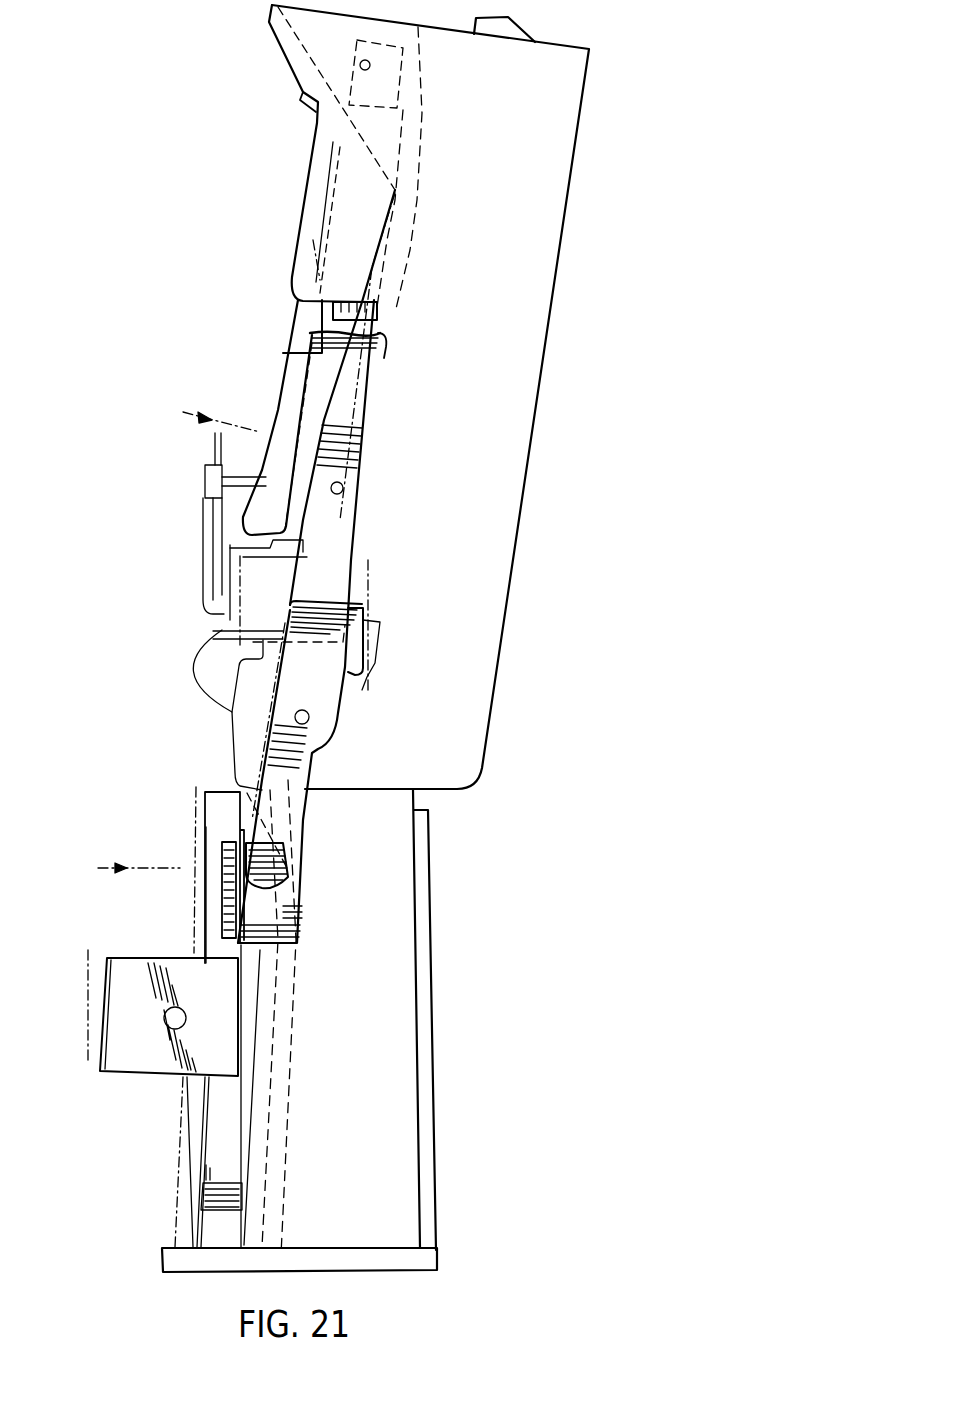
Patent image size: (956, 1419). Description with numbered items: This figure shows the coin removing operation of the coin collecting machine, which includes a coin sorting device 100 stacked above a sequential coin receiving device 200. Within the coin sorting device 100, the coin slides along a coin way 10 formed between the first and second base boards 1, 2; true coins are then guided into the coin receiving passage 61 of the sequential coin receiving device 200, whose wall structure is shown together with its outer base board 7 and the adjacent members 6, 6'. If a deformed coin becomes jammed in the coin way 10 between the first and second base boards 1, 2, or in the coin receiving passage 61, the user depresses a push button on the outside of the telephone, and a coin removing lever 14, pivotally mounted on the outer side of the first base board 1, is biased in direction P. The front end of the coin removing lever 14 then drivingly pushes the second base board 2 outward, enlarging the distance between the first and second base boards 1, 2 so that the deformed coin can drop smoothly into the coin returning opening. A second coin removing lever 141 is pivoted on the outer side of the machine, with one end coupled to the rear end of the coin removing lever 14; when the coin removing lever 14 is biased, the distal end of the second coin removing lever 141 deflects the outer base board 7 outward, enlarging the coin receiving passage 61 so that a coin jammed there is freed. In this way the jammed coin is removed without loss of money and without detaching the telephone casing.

The coin sorting device 100 is at (262, 103).
The first base board 1 is at (568, 175).
The second base board 2 is at (327, 240).
The coin way 10 is at (408, 249).
The coin removing lever 14 is at (387, 343).
The second coin removing lever 141 is at (283, 765).
The direction of bias P is at (223, 578).
The sequential coin receiving device 200 is at (457, 993).
The support frame 6 is at (462, 1020).
The support bracket 6' is at (171, 1017).
The outer base board 7 is at (220, 917).
The coin receiving passage 61 is at (292, 1046).